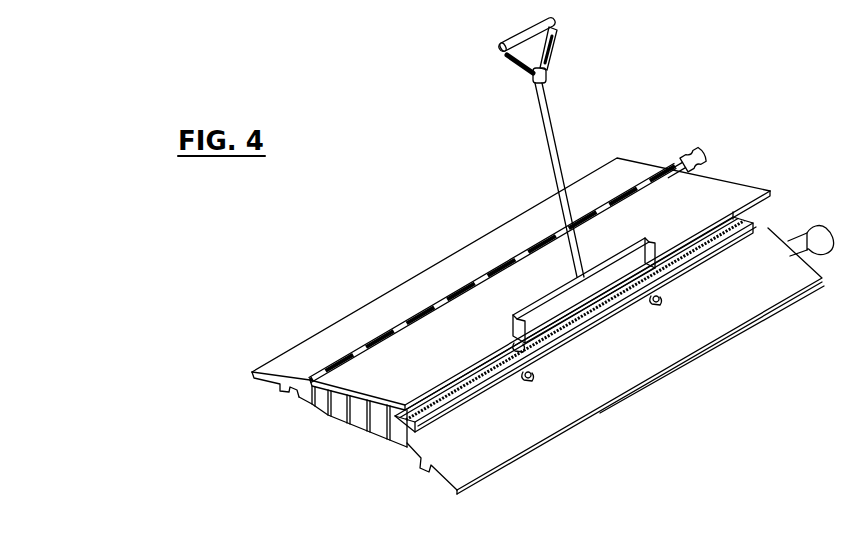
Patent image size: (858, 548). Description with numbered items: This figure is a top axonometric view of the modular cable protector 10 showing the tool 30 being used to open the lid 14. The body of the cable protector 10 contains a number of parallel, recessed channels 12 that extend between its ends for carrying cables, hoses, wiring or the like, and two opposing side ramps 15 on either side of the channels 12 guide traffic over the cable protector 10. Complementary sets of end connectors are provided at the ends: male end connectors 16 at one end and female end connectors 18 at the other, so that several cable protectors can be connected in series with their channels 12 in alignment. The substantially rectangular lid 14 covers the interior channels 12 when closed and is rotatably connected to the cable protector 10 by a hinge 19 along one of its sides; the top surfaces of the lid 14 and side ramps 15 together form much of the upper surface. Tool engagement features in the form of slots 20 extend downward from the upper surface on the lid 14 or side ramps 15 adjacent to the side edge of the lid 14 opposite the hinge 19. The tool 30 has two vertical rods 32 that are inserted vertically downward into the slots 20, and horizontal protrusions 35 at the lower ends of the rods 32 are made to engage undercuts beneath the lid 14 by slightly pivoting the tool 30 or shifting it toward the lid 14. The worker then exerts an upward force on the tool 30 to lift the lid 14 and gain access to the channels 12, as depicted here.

The cable protector 10 is at (296, 308).
The channels 12 is at (352, 428).
The lid 14 is at (467, 317).
The side ramps 15 is at (398, 303).
The male end connectors 16 is at (688, 157).
The female end connectors 18 is at (287, 393).
The hinge 19 is at (352, 350).
The slots 20 is at (532, 380).
The tool 30 is at (571, 147).
The vertical rods 32 is at (565, 332).
The horizontal protrusions 35 is at (560, 343).